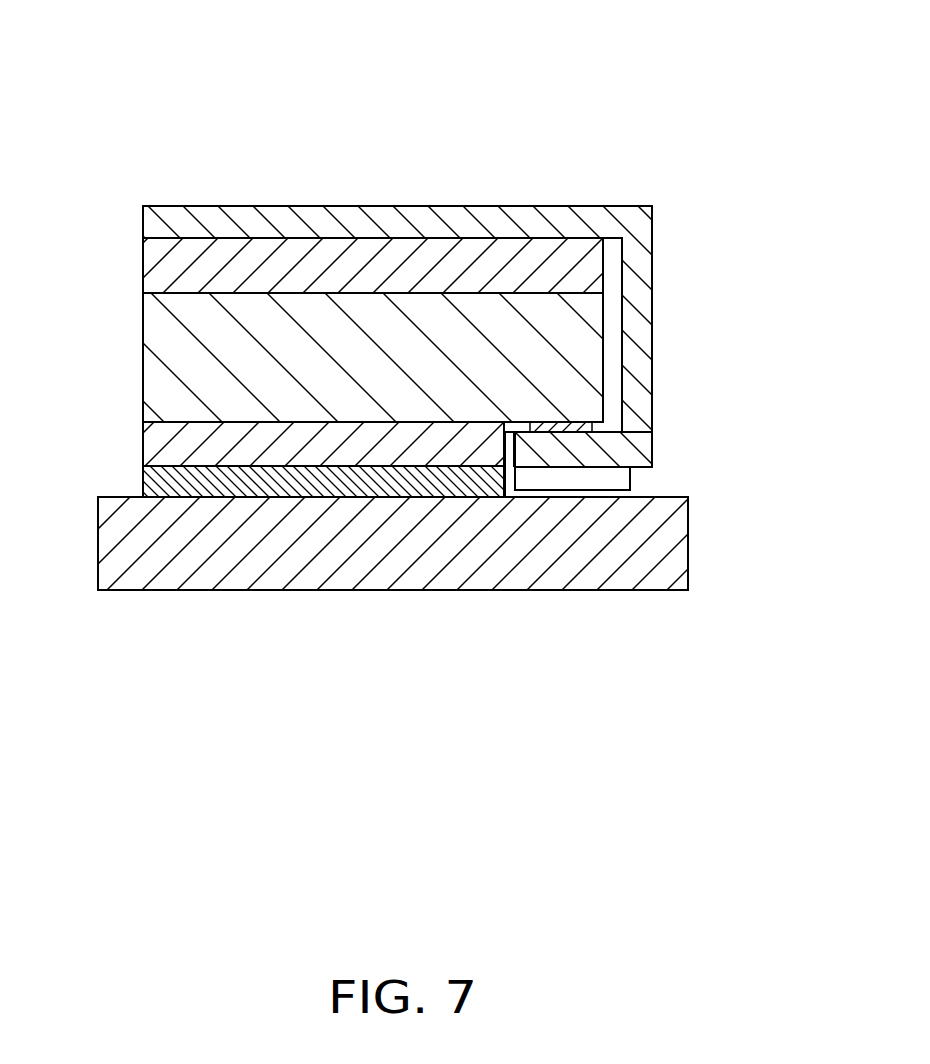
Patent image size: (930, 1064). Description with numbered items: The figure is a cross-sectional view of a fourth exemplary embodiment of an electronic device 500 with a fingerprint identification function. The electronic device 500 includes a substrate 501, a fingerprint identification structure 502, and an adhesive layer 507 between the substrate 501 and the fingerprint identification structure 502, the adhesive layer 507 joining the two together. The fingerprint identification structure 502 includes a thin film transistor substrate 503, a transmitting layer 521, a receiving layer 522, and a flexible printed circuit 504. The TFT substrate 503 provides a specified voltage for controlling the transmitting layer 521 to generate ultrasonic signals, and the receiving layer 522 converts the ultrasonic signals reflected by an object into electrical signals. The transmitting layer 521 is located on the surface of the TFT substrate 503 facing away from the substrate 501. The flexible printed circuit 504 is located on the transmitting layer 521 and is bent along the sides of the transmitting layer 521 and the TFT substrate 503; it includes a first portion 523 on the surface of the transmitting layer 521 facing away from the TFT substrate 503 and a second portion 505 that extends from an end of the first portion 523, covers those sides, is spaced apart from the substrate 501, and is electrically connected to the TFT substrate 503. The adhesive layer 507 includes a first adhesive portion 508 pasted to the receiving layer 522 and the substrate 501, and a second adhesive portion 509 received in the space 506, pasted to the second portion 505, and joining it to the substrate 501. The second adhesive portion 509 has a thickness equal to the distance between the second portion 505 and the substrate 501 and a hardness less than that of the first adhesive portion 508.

The electronic device 500 is at (390, 45).
The substrate 501 is at (670, 543).
The fingerprint identification structure 502 is at (100, 220).
The thin film transistor (TFT) substrate 503 is at (178, 360).
The flexible printed circuit (FPC) 504 is at (757, 202).
The second portion 505 is at (603, 447).
The space 506 is at (665, 478).
The adhesive layer 507 is at (535, 650).
The first adhesive portion 508 is at (452, 478).
The second adhesive portion 509 is at (533, 482).
The transmitting layer 521 is at (163, 265).
The receiving layer 522 is at (158, 445).
The first portion 523 is at (583, 218).